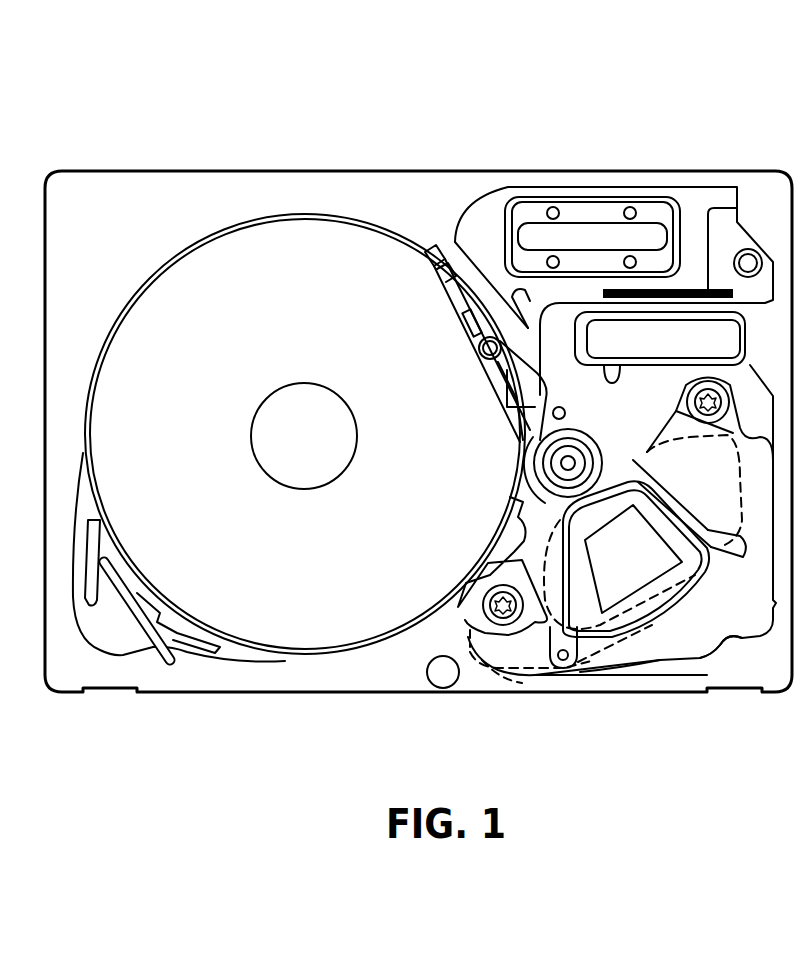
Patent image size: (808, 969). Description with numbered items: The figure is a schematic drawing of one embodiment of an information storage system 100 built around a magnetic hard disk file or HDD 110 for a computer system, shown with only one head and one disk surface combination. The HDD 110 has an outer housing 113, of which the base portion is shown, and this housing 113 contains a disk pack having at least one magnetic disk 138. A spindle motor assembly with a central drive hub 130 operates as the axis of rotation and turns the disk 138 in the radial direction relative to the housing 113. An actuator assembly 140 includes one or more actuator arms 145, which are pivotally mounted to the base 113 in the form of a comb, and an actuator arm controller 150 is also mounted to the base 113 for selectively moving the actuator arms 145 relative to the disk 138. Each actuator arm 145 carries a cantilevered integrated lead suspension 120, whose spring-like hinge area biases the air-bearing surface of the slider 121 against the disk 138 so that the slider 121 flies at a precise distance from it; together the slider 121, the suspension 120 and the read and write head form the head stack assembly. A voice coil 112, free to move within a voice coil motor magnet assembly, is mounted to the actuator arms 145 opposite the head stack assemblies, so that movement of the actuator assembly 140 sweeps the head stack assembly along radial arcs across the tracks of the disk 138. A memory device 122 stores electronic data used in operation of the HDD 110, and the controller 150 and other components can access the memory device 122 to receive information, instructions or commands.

The disk drive 100 is at (50, 47).
The HDD 110 is at (180, 156).
The outer housing 113 is at (355, 171).
The magnetic disk 138 is at (283, 212).
The central drive hub 130 is at (325, 451).
The slider 121 is at (428, 268).
The integrated lead suspension 120 is at (453, 313).
The actuator arm 145 is at (497, 405).
The actuator assembly 140 is at (531, 487).
The memory device 122 is at (680, 712).
The voice coil 112 is at (568, 598).
The actuator arm controller 150 is at (728, 640).